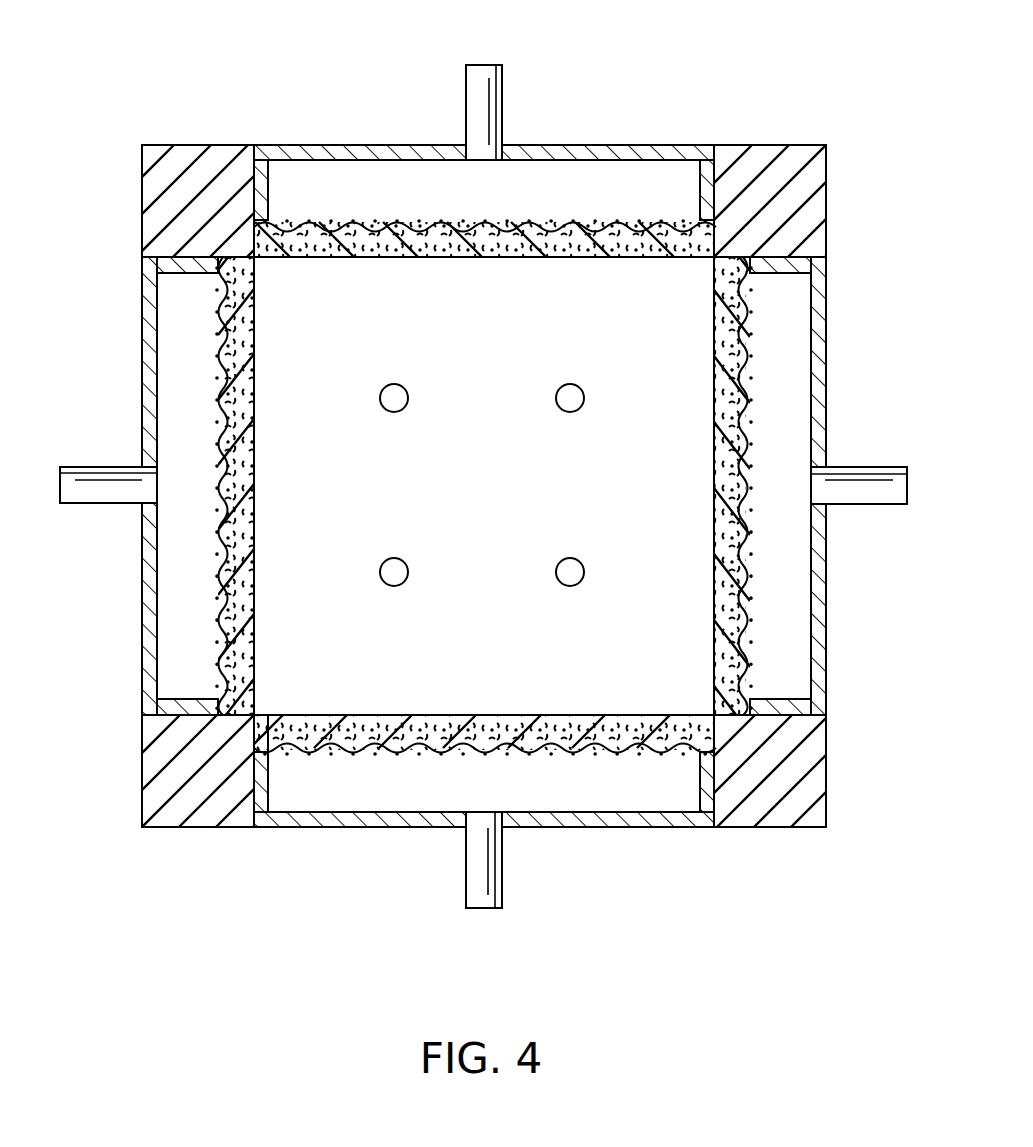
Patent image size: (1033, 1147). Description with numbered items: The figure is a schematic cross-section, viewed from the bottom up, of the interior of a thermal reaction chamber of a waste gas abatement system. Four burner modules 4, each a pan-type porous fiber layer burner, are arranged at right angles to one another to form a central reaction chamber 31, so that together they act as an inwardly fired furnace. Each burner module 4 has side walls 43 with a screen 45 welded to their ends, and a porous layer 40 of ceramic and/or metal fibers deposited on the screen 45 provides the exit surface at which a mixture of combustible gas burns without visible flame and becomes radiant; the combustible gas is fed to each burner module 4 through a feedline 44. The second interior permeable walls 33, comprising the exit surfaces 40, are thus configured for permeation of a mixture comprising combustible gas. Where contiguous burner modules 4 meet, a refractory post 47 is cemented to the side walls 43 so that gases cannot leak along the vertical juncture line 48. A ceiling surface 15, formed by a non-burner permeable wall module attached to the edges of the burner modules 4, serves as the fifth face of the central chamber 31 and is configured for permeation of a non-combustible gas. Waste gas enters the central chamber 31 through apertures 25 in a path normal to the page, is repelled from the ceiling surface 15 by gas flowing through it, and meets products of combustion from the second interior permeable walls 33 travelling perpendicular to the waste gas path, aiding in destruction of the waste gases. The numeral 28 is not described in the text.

The burner module 4 is at (577, 120).
The ceiling surface 15 is at (680, 426).
The aperture 25 is at (404, 386).
The bottom porous layer 28 is at (710, 714).
The central reaction chamber 31 is at (472, 494).
The second interior permeable wall 33 is at (378, 240).
The porous layer 40 is at (257, 462).
The side wall 43 is at (205, 262).
The feedline 44 is at (466, 78).
The screen 45 is at (218, 302).
The refractory post 47 is at (142, 198).
The vertical juncture line 48 is at (258, 715).